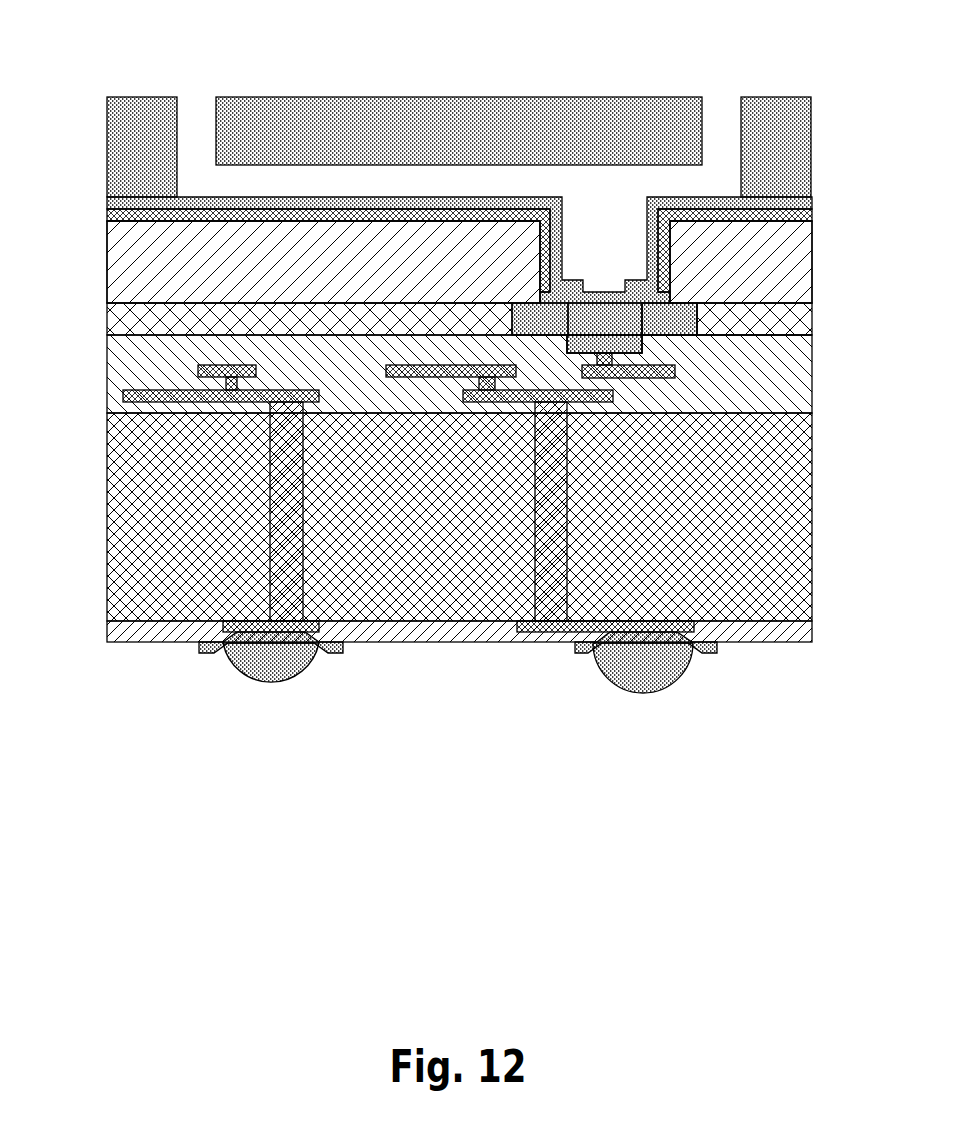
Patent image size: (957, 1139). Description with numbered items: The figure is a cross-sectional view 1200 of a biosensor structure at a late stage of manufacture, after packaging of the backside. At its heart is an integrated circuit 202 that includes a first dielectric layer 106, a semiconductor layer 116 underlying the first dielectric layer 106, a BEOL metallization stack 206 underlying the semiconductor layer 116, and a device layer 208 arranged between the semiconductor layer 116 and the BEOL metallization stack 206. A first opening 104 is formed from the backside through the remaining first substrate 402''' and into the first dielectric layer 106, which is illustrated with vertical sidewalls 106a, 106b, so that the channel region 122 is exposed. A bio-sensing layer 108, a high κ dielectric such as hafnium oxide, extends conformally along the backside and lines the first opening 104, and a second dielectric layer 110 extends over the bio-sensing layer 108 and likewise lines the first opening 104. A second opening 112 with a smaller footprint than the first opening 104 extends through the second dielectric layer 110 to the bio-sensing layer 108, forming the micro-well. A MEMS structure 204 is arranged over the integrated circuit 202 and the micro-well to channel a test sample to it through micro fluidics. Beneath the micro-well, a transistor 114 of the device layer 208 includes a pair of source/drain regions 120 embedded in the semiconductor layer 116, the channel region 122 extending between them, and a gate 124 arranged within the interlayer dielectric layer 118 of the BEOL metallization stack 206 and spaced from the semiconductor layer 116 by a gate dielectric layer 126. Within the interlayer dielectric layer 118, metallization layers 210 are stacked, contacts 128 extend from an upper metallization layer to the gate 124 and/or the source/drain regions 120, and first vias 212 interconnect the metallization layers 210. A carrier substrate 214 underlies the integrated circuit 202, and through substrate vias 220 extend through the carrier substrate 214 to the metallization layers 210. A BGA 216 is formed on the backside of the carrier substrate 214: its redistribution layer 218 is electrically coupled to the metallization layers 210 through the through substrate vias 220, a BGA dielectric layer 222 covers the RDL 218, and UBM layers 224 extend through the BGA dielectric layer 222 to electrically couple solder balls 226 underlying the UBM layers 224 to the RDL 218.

The cross-sectional view 1200 is at (838, 66).
The MEMS structure 204 is at (811, 147).
The second dielectric layer 110 is at (811, 203).
The bio-sensing layer 108 is at (811, 215).
The integrated circuit 202 is at (86, 212).
The first dielectric layer 106 is at (177, 298).
The vertical sidewall 106a is at (540, 252).
The vertical sidewall 106b is at (670, 255).
The semiconductor layer 116 is at (341, 334).
The first opening 104 is at (528, 309).
The channel region 122 is at (589, 329).
The second opening 112 is at (669, 319).
The device layer 208 is at (768, 344).
The interlayer dielectric layer 118 is at (398, 406).
The transistor 114 is at (528, 339).
The first vias 212 is at (233, 384).
The metallization layers 210 is at (490, 396).
The contacts 128 is at (609, 362).
The gate 124 is at (637, 336).
The gate dielectric layer 126 is at (585, 336).
The source/drain regions 120 is at (688, 334).
The carrier substrate 214 is at (811, 512).
The through substrate vias 220 is at (288, 615).
The redistribution layer 218 is at (536, 618).
The BGA dielectric layer 222 is at (107, 635).
The under bump metallization layers 224 is at (333, 652).
The solder balls 226 is at (643, 690).
The ball grid array 216 is at (645, 696).
The remaining first substrate 402''' is at (71, 278).
The BEOL metallization stack 206 is at (104, 336).